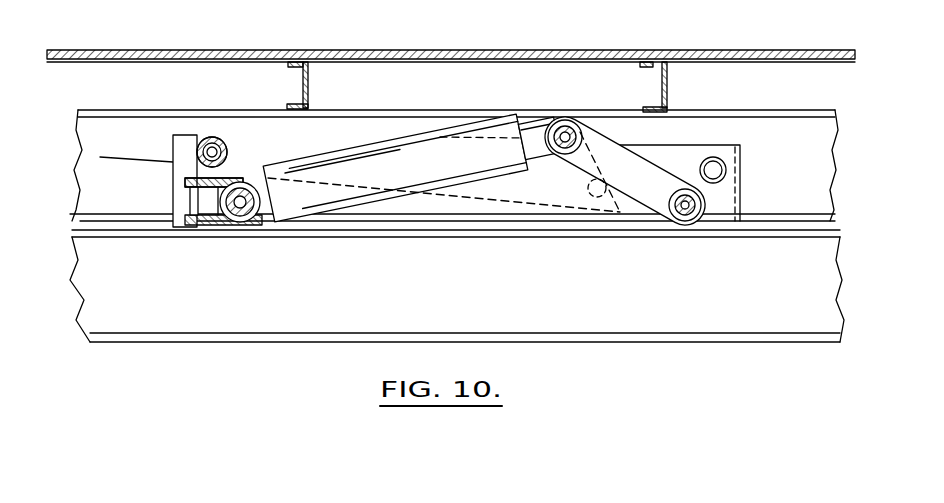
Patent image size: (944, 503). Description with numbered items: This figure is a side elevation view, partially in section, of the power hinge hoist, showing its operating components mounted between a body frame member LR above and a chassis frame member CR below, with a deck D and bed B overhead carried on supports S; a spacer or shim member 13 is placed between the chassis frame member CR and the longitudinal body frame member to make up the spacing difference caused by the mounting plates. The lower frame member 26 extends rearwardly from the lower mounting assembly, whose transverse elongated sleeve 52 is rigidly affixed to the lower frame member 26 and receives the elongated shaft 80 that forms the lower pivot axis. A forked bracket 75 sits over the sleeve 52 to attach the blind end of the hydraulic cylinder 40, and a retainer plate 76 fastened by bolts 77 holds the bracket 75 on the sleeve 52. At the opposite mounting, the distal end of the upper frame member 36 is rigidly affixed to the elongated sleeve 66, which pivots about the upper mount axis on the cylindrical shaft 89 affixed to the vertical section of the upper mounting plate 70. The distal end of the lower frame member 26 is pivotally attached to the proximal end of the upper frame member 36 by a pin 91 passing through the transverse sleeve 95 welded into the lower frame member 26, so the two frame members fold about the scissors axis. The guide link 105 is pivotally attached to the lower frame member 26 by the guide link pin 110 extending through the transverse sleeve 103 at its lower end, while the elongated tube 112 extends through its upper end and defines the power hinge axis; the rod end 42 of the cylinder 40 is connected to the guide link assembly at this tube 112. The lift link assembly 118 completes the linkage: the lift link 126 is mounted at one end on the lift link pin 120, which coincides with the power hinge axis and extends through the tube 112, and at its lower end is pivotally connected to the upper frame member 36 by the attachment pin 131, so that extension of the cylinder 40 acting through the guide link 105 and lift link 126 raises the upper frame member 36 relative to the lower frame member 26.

The bed B is at (158, 46).
The deck D is at (513, 49).
The support bracket S is at (308, 87).
The longitudinal rail LR is at (79, 188).
The chassis frame member CR is at (82, 338).
The spacer or shim member 13 is at (840, 232).
The lower frame member 26 is at (446, 212).
The upper frame member 36 is at (270, 126).
The hydraulic cylinder 40 is at (440, 128).
The rod end 42 is at (522, 120).
The elongated sleeve or tube 52 is at (236, 226).
The elongated sleeve 66 is at (198, 150).
The upper mounting plate 70 is at (175, 170).
The forked bracket 75 is at (212, 228).
The retainer plate 76 is at (190, 192).
The bolts 77 is at (100, 157).
The elongated shaft 80 is at (262, 218).
The cylindrical shaft 89 is at (203, 142).
The pin 91 is at (728, 172).
The transverse sleeve 95 is at (738, 168).
The transverse sleeve 103 is at (676, 224).
The guide link 105 is at (628, 165).
The guide link pin 110 is at (692, 218).
The elongated tube 112 is at (566, 122).
The lift link assembly 118 is at (566, 176).
The lift link pin 120 is at (572, 130).
The lift link 126 is at (561, 186).
The attachment pin 131 is at (620, 212).